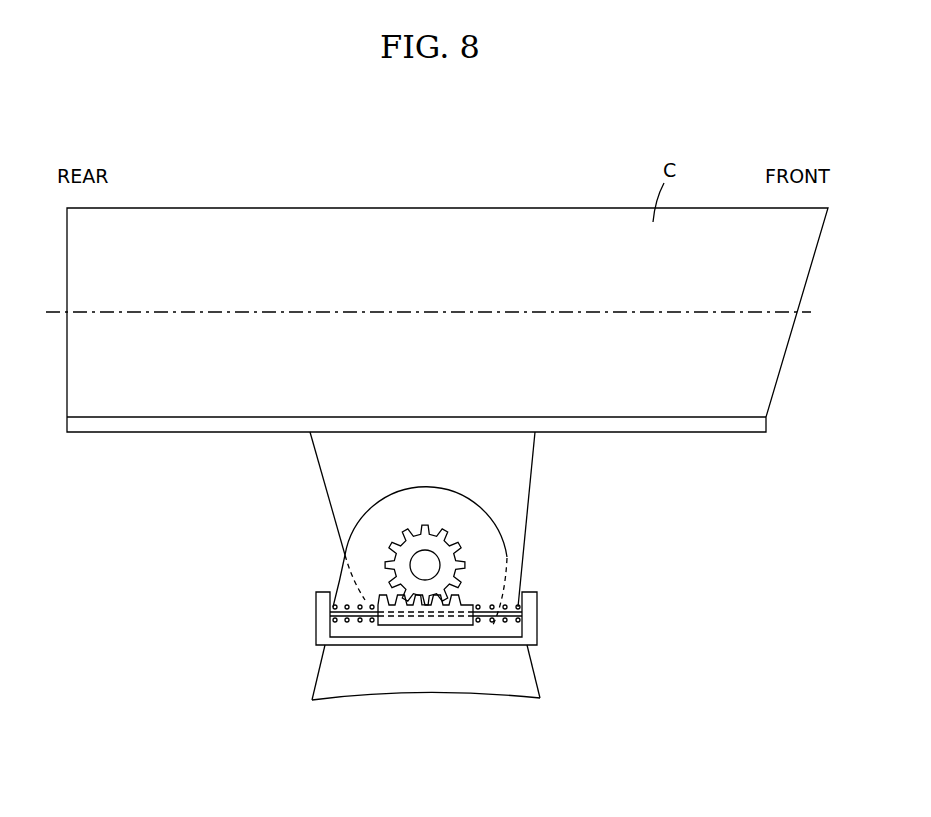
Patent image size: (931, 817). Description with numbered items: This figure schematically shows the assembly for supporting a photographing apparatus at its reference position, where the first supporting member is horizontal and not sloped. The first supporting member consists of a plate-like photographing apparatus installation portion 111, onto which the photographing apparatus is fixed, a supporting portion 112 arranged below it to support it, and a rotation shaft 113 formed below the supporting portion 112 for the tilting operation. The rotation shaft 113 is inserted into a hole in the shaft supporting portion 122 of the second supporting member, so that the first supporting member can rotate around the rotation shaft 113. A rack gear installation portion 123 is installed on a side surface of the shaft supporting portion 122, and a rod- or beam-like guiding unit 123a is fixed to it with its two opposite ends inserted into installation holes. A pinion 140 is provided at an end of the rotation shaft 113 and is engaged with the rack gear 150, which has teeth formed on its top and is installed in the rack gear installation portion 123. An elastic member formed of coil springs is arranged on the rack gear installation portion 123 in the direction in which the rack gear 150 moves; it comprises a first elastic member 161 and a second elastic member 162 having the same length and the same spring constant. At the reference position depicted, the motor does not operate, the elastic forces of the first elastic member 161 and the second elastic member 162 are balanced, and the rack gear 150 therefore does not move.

The photographing apparatus installation portion 111 is at (681, 423).
The supporting portion 112 is at (338, 484).
The rotation shaft 113 is at (425, 565).
The shaft supporting portion 122 is at (528, 680).
The rack gear installation portion 123 is at (315, 608).
The guiding unit 123a is at (520, 614).
The pinion 140 is at (462, 548).
The rack gear 150 is at (420, 626).
The first elastic member 161 is at (342, 622).
The second elastic member 162 is at (490, 622).